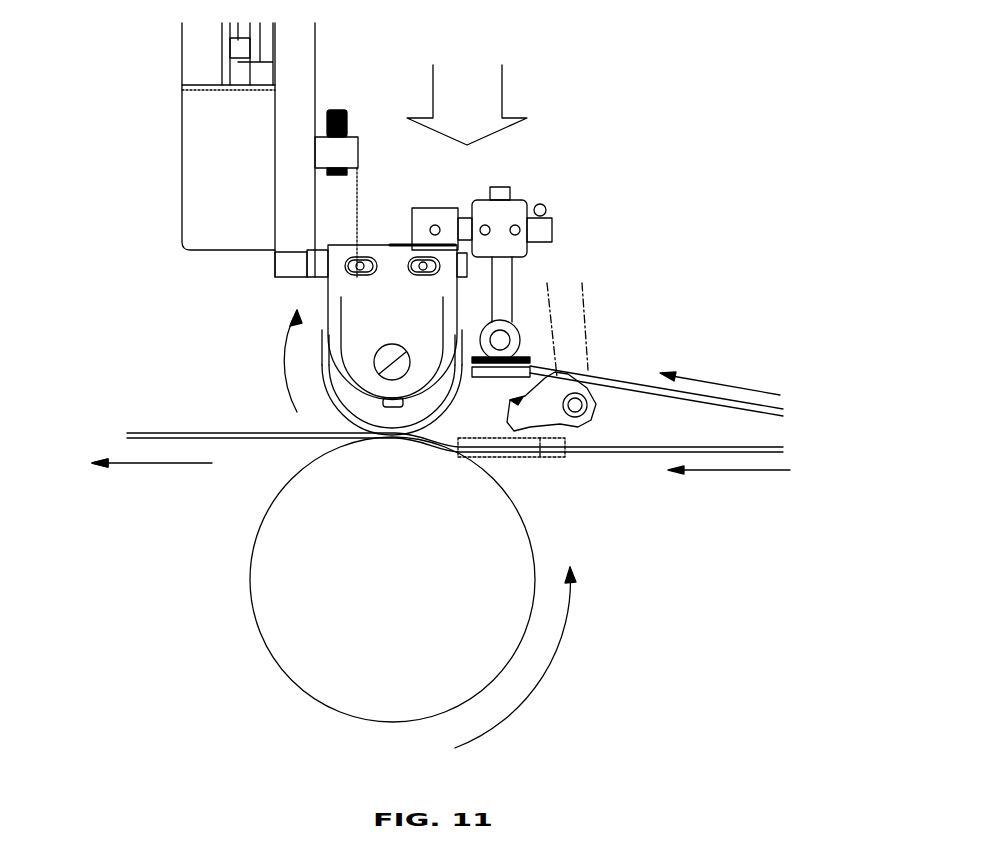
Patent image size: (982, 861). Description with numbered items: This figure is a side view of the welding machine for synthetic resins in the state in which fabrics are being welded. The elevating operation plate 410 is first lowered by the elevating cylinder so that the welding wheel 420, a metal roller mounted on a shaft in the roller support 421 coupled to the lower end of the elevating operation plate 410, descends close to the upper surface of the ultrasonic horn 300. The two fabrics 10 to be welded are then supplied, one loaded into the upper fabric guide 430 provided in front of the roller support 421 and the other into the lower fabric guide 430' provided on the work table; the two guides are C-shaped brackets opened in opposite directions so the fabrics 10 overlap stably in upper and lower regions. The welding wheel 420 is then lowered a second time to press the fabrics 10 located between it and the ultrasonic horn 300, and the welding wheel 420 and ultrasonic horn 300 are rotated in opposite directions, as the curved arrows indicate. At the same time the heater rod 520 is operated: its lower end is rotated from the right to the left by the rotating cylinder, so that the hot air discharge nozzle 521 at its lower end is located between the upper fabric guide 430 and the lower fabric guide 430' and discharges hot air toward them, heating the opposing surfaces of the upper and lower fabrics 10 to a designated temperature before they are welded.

The elevating operation plate 410 is at (298, 162).
The roller support 421 is at (350, 283).
The welding wheel 420 is at (332, 384).
The upper fabric guide 430 is at (549, 279).
The heater rod 520 is at (572, 312).
The hot air discharge nozzle 521 is at (590, 417).
The fabrics 10 is at (640, 377).
The lower fabric guide 430' is at (567, 523).
The ultrasonic horn 300 is at (293, 580).